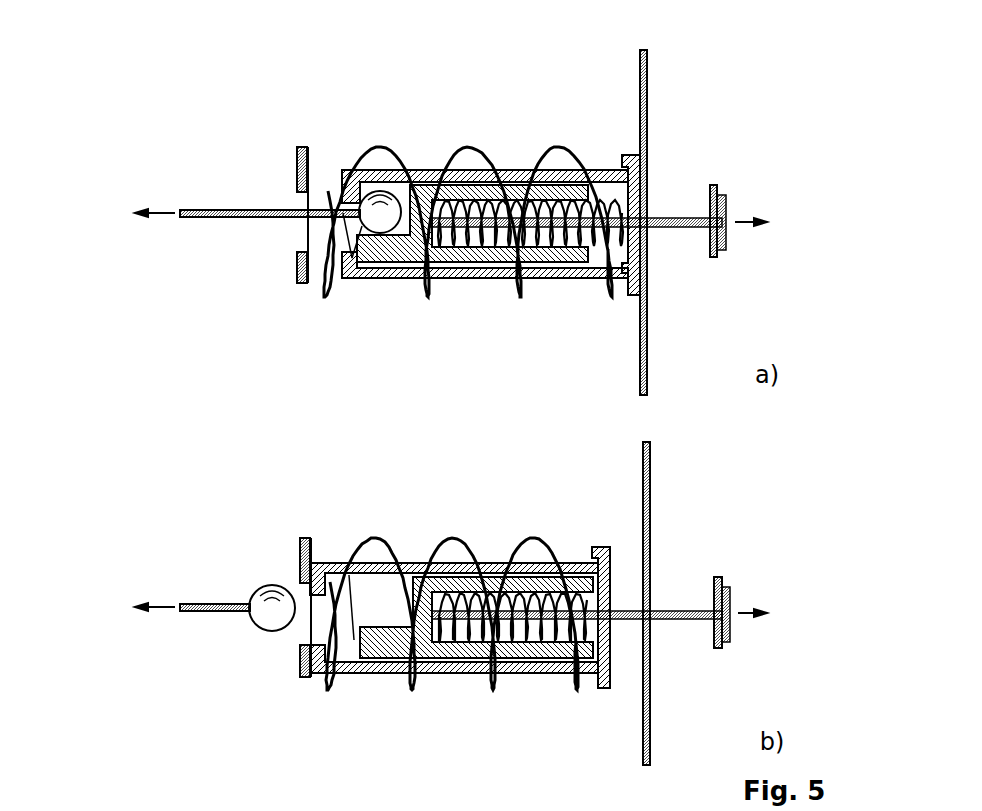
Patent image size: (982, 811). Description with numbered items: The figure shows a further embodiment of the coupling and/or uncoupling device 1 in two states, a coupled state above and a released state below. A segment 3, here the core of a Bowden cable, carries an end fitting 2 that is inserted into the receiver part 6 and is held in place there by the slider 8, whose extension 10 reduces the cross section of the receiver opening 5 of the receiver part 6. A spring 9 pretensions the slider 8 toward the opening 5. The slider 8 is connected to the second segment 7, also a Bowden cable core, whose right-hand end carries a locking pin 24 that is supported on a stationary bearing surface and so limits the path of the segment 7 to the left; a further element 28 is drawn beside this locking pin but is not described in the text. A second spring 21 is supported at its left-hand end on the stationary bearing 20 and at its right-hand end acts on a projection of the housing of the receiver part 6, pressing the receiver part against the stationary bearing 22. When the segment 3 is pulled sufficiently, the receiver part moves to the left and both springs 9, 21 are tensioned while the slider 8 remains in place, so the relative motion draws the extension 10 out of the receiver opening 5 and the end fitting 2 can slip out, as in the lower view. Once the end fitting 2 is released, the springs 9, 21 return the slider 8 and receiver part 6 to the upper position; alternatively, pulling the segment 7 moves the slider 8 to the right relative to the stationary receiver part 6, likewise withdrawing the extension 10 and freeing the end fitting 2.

The coupling and/or uncoupling device 1 is at (530, 86).
The end fitting 2 is at (375, 192).
The segment 3 is at (218, 212).
The receiver opening 5 is at (342, 220).
The receiver part 6 is at (428, 168).
The second segment 7 is at (684, 215).
The slider 8 is at (548, 262).
The spring 9 is at (600, 195).
The extension 10 is at (392, 252).
The stationary bearing 20 is at (300, 278).
The spring 21 is at (467, 150).
The stationary bearing 22 is at (648, 140).
The locking pin 24 is at (722, 200).
The nut 28 is at (717, 256).